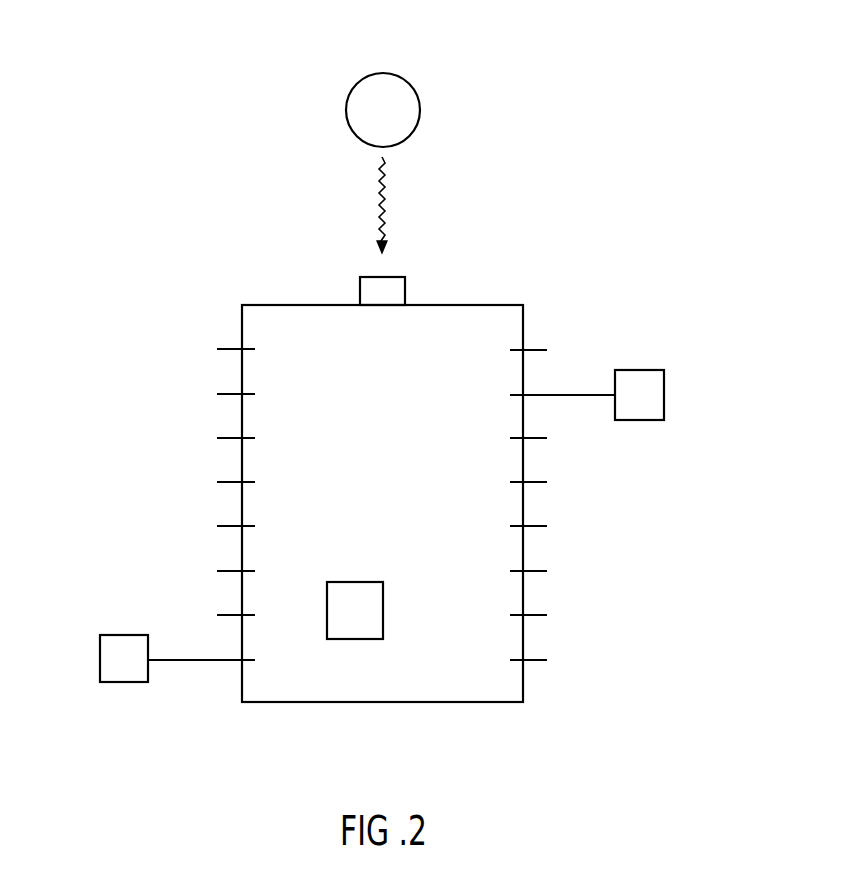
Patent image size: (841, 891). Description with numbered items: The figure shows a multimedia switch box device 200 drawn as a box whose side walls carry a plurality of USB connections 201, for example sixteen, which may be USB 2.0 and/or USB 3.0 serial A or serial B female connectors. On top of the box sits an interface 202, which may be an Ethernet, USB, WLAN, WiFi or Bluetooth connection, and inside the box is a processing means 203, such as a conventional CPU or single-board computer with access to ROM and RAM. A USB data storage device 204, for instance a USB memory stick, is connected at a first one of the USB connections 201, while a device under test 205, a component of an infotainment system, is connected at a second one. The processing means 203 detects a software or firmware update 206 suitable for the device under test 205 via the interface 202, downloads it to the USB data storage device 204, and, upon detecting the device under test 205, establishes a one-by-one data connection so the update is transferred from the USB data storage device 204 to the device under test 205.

The multimedia switch box device 200 is at (125, 175).
The USB connections 201 is at (232, 348).
The interface 202 is at (405, 285).
The processing means 203 is at (384, 613).
The USB data storage device 204 is at (665, 396).
The device under test 205 is at (100, 660).
The software or firmware update 206 is at (381, 73).